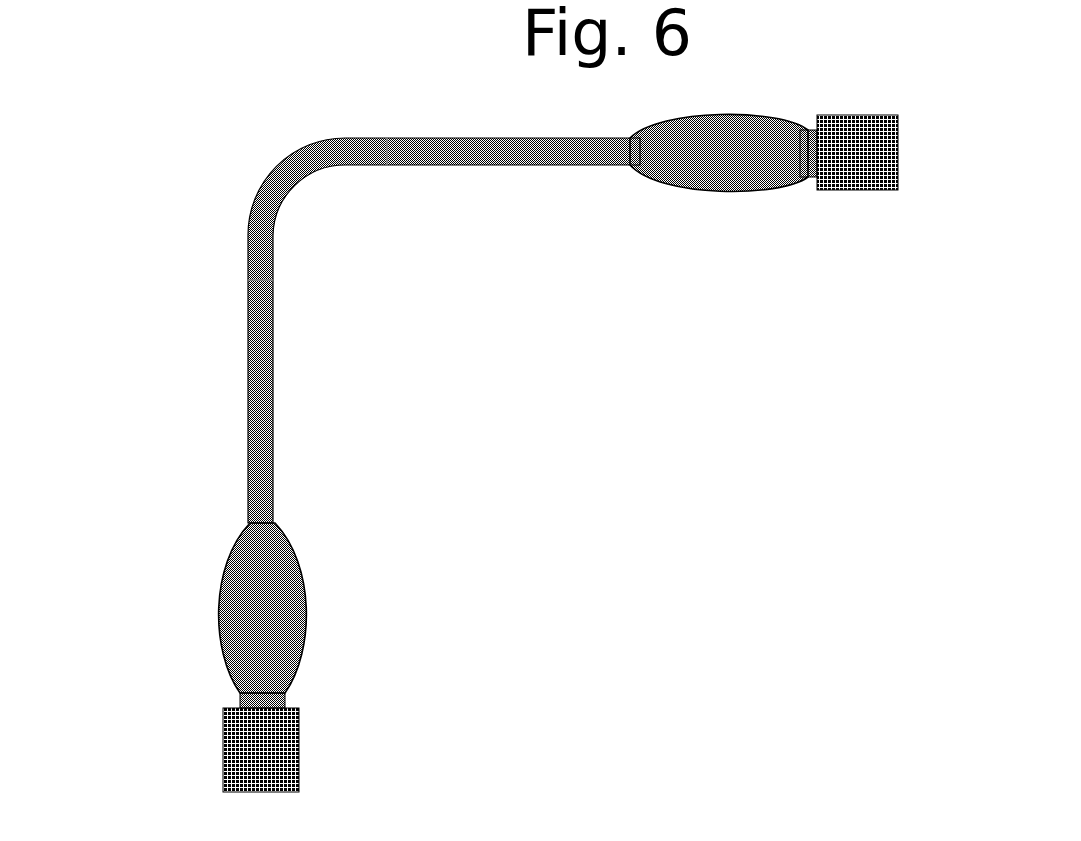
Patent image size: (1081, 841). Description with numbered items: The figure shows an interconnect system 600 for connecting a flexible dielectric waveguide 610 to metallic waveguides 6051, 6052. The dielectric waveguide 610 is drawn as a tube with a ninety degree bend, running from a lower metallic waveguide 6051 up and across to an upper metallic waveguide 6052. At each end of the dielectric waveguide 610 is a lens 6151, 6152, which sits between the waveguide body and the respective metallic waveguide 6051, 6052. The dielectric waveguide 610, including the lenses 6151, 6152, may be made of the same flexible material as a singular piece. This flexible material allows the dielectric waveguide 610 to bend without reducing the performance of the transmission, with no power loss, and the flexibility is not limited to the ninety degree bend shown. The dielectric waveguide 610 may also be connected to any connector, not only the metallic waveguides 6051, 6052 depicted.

The interconnect system 600 is at (203, 75).
The flexible dielectric waveguide 610 is at (333, 240).
The lens 6151 is at (318, 550).
The lens 6152 is at (738, 213).
The metallic waveguide 6051 is at (337, 701).
The metallic waveguide 6052 is at (911, 103).